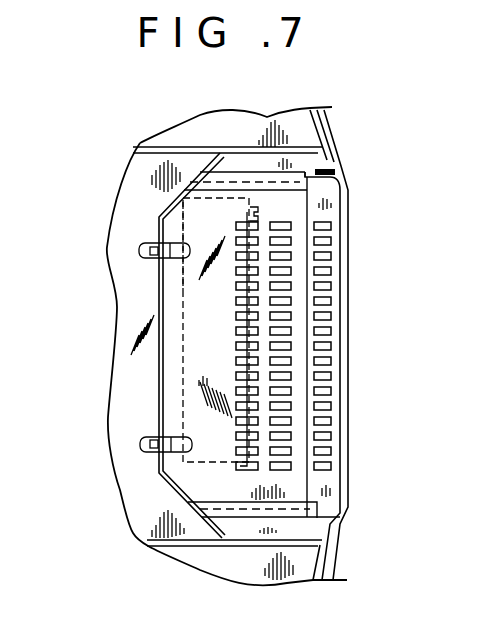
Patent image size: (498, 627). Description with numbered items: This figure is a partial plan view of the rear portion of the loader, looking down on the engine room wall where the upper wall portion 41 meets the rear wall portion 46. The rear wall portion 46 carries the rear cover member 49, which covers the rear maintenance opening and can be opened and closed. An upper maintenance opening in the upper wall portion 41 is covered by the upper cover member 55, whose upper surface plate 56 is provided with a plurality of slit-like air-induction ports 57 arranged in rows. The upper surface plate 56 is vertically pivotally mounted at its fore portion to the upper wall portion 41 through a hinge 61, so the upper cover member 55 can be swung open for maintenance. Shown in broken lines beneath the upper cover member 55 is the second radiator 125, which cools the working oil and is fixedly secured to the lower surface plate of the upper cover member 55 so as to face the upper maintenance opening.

The upper wall portion 41 is at (135, 192).
The rear wall portion 46 is at (333, 163).
The rear cover member 49 is at (352, 228).
The upper cover member 55 is at (343, 304).
The upper surface plate 56 is at (178, 371).
The slit-like air-induction ports 57 is at (325, 375).
The hinge 61 is at (140, 445).
The second radiator 125 is at (183, 292).